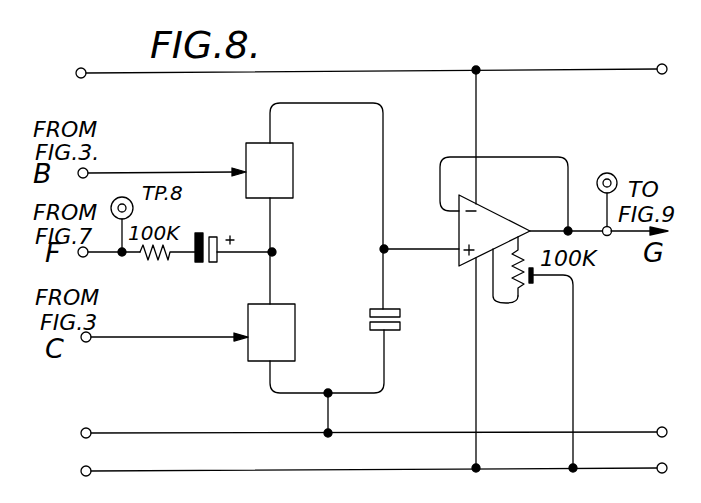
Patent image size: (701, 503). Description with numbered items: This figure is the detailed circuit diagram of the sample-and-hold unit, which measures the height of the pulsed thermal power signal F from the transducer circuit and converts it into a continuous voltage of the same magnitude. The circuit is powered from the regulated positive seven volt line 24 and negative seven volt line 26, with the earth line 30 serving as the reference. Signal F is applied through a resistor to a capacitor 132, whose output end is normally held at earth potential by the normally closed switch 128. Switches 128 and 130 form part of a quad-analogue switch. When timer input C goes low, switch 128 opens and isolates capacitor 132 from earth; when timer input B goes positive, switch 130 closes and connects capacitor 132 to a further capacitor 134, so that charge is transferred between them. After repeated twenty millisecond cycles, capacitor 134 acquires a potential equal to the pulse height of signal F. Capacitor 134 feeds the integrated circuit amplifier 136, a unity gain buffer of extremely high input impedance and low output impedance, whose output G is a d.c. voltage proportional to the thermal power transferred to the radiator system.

The +7 volt supply line 24 is at (197, 73).
The −7 volt supply line 26 is at (170, 471).
The earth line 30 is at (138, 425).
The switch 128 is at (283, 348).
The switch 130 is at (280, 184).
The capacitor 132 is at (197, 234).
The capacitor 134 is at (370, 312).
The integrated circuit amplifier 136 is at (459, 226).